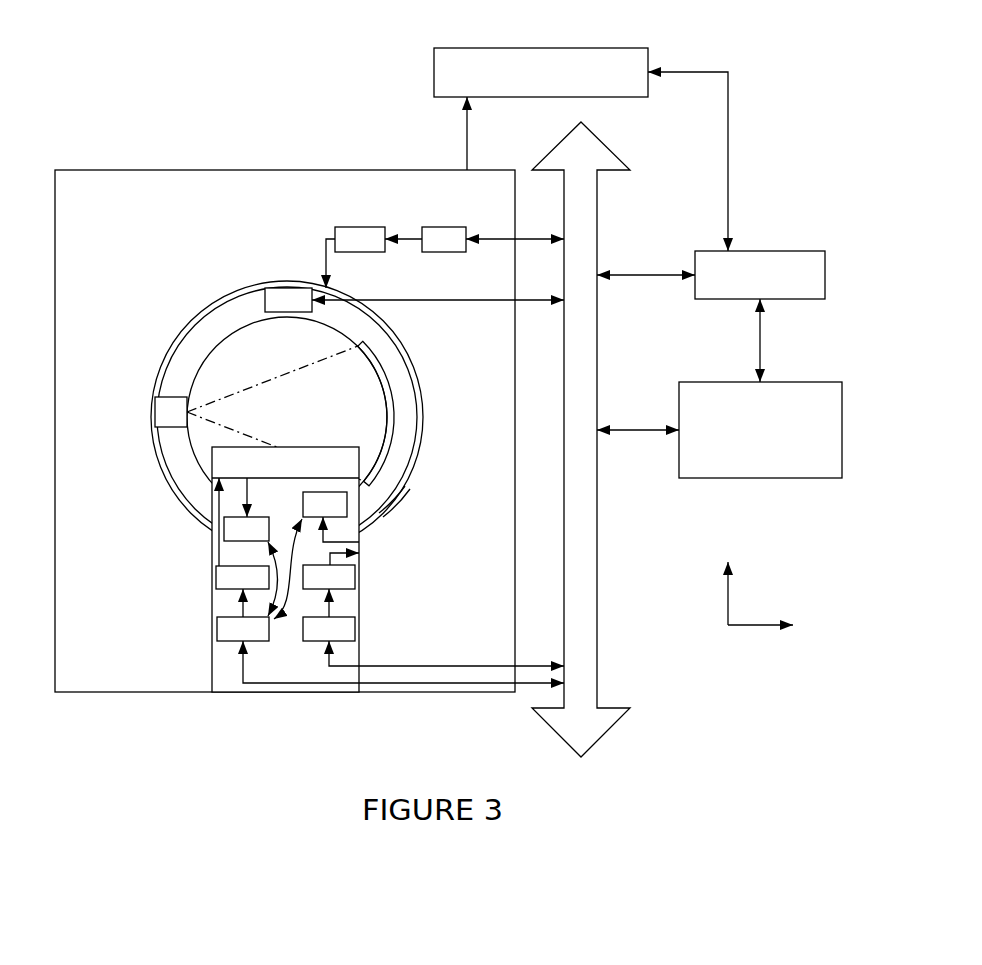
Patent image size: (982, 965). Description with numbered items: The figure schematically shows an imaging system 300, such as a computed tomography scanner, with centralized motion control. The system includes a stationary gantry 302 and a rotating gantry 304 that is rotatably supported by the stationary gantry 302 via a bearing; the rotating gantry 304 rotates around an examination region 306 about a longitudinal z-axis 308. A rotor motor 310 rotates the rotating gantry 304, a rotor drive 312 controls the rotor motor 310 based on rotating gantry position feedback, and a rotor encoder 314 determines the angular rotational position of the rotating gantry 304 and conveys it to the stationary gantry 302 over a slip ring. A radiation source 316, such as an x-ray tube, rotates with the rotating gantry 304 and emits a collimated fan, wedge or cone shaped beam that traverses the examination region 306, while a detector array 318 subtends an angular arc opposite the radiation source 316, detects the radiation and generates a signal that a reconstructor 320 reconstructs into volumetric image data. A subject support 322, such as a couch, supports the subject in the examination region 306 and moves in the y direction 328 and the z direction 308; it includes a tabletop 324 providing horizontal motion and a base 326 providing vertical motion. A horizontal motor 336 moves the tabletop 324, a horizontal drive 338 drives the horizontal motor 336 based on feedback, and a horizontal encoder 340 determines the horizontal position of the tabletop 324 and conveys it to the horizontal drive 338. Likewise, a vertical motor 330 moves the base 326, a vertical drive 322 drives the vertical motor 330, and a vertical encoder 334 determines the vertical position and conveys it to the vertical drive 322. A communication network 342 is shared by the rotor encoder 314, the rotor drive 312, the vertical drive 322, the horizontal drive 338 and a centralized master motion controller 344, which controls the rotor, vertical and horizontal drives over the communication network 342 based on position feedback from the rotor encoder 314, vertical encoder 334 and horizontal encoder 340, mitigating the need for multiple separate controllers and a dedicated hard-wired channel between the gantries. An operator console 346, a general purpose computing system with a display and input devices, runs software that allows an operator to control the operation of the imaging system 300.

The imaging system 300 is at (96, 138).
The stationary gantry 302 is at (163, 368).
The rotating gantry 304 is at (286, 170).
The examination region 306 is at (287, 417).
The z-axis 308 is at (718, 652).
The rotor motor 310 is at (352, 226).
The rotor drive 312 is at (433, 226).
The rotor encoder 314 is at (283, 288).
The radiation source 316 is at (155, 411).
The detector array 318 is at (391, 413).
The reconstructor 320 is at (540, 48).
The subject support 322 is at (394, 553).
The tabletop 324 is at (359, 463).
The base 326 is at (359, 497).
The y direction 328 is at (713, 546).
The vertical motor 330 is at (355, 577).
The vertical encoder 334 is at (347, 503).
The horizontal motor 336 is at (216, 580).
The horizontal drive 338 is at (217, 630).
The horizontal encoder 340 is at (224, 528).
The communication network 342 is at (597, 233).
The master motion controller 344 is at (760, 479).
The operator console 346 is at (760, 251).